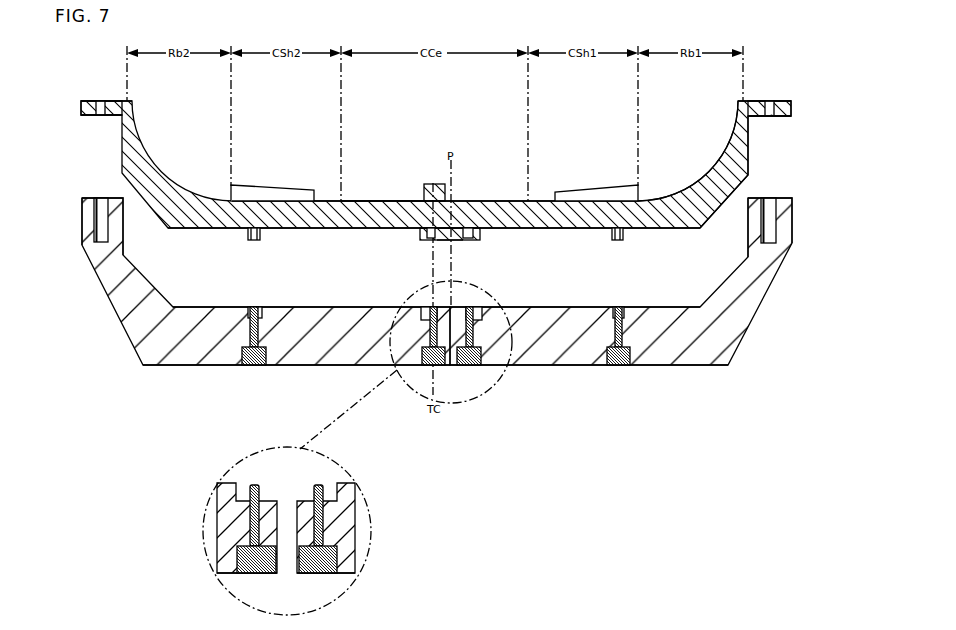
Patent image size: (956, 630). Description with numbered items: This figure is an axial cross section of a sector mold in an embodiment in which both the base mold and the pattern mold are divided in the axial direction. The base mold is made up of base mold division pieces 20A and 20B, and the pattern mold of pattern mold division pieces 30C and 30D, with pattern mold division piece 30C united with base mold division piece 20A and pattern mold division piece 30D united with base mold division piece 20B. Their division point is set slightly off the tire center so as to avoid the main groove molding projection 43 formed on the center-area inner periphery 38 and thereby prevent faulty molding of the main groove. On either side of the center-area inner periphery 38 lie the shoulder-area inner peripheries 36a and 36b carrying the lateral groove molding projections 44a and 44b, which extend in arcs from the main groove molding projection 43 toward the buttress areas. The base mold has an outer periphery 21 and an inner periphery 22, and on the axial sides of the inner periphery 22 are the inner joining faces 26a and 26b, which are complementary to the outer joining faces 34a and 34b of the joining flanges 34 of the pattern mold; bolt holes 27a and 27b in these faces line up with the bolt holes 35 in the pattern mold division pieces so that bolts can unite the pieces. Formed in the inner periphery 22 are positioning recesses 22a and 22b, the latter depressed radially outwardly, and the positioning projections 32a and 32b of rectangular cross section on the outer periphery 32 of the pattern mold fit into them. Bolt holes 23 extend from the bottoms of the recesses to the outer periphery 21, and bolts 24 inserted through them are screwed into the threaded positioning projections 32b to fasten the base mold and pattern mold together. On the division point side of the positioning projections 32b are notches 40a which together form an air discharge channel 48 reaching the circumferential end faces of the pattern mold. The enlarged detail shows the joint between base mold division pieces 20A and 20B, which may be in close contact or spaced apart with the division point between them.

The base mold division piece 20A is at (750, 334).
The base mold division piece 20B is at (129, 342).
The outer periphery 21 is at (491, 366).
The inner periphery 22 is at (555, 307).
The positioning recess 22a is at (255, 308).
The positioning recess 22b is at (425, 308).
The bolt hole 23 is at (258, 333).
The bolt 24 is at (257, 366).
The inner joining face 26a is at (760, 198).
The inner joining face 26b is at (117, 197).
The bolt hole 27a is at (766, 207).
The bolt hole 27b is at (101, 205).
The pattern mold division piece 30C is at (790, 101).
The pattern mold division piece 30D is at (84, 100).
The outer periphery 32 is at (336, 229).
The positioning projection 32a is at (248, 236).
The positioning projection 32b is at (422, 235).
The joining flange 34 is at (128, 102).
The outer joining face 34a is at (771, 117).
The outer joining face 34b is at (93, 115).
The bolt hole 35 is at (100, 100).
The shoulder-area inner periphery 36a is at (685, 185).
The shoulder-area inner periphery 36b is at (180, 177).
The center-area inner periphery 38 is at (388, 202).
The notch 40a is at (437, 240).
The main groove molding projection 43 is at (432, 184).
The lateral groove molding projection 44a is at (623, 185).
The lateral groove molding projection 44b is at (240, 185).
The air discharge channel 48 is at (452, 232).